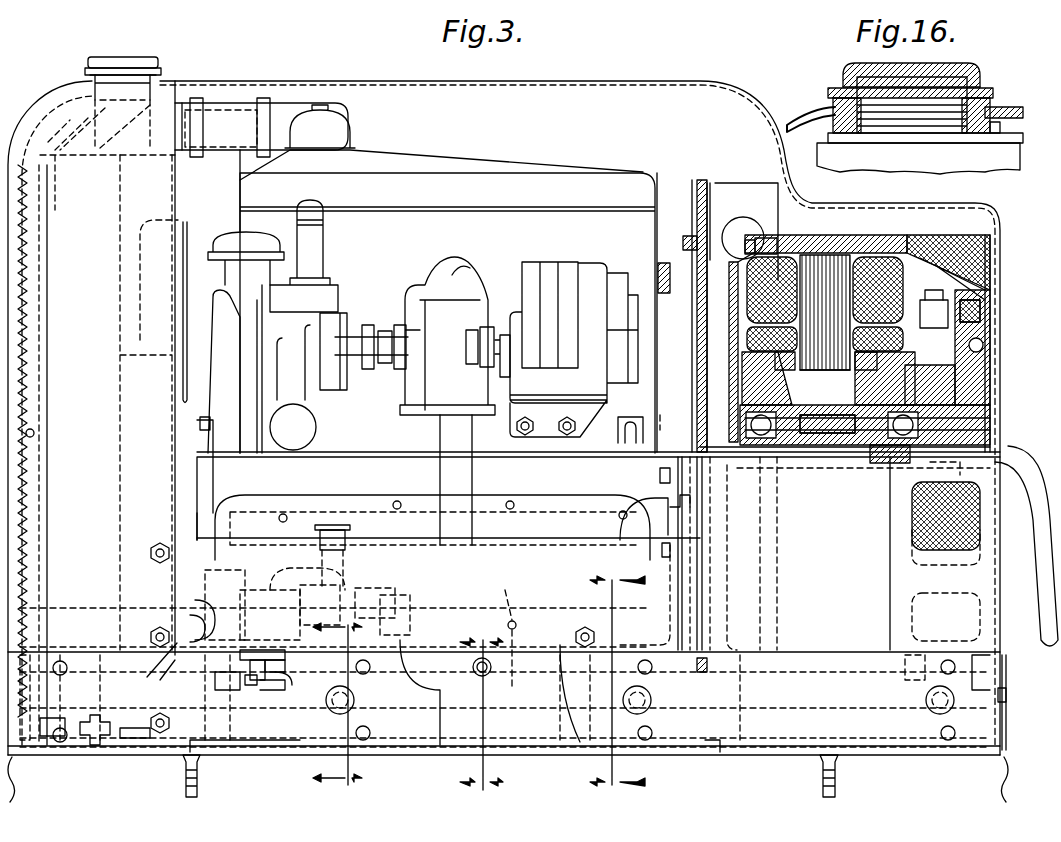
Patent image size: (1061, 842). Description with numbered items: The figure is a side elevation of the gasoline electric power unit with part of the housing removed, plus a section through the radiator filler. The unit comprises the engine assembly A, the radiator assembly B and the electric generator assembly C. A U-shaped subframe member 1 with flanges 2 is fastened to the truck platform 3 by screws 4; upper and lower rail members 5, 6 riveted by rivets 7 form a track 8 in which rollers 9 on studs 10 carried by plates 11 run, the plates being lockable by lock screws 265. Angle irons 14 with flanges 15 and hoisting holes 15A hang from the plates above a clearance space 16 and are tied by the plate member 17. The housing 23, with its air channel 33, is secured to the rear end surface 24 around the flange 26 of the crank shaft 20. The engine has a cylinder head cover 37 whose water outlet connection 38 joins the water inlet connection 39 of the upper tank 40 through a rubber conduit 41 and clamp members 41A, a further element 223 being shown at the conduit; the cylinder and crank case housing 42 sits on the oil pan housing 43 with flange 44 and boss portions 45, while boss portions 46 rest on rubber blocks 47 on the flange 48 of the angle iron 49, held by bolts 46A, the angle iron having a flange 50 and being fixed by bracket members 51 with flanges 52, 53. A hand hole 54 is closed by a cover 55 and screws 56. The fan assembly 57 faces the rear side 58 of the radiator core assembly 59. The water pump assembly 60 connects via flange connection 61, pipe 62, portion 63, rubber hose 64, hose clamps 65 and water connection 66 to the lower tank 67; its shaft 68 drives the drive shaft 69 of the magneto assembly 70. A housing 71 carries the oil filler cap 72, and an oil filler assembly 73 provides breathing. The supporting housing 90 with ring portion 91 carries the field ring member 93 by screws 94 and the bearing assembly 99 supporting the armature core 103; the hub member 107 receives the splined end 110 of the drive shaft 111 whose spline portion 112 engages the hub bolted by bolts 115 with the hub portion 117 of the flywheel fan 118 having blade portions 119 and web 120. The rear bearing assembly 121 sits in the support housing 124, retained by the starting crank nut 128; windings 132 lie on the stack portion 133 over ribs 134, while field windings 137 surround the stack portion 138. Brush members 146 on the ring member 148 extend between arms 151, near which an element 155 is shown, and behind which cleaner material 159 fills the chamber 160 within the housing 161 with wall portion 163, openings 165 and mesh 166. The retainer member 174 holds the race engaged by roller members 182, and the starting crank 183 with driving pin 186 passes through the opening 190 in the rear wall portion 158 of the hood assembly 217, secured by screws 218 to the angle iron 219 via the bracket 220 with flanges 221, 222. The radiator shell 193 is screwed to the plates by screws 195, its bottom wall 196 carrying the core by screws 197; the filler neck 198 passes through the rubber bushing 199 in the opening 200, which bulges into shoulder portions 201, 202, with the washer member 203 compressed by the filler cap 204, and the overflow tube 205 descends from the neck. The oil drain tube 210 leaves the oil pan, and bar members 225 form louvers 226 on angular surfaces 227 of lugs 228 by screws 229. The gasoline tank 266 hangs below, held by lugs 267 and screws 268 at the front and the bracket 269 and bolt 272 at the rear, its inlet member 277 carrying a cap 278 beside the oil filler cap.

In FIG. 3, the subframe member 1 is at (878, 755).
In FIG. 3, the flanges 2 is at (838, 652).
In FIG. 3, the platform or supporting portion 3 is at (1033, 760).
In FIG. 3, the screws 4 is at (198, 785).
In FIG. 3, the upper rail members 5 is at (78, 678).
In FIG. 3, the lower rail members 6 is at (108, 686).
In FIG. 3, the rivets 7 is at (60, 660).
In FIG. 3, the track or channel 8 is at (337, 709).
In FIG. 3, the rollers or wheels 9 is at (935, 742).
In FIG. 3, the studs 10 is at (354, 696).
In FIG. 3, the plates 11 is at (617, 683).
In FIG. 3, the angle irons 14 is at (700, 182).
In FIG. 3, the flanges 15 is at (738, 184).
In FIG. 3, the holes 15A is at (744, 215).
In FIG. 3, the clearance space 16 is at (712, 752).
In FIG. 3, the plate member 17 is at (690, 182).
In FIG. 3, the crank shaft 20 is at (700, 440).
In FIG. 3, the housing 23 is at (693, 237).
In FIG. 3, the rear end surface 24 is at (697, 366).
In FIG. 3, the flange 26 is at (675, 503).
In FIG. 3, the groove or channel 33 is at (660, 265).
In FIG. 3, the cylinder head cover 37 is at (545, 168).
In FIG. 3, the water outlet connection 38 is at (352, 112).
In FIG. 3, the water inlet connection 39 is at (222, 110).
In FIG. 3, the upper tank 40 is at (90, 152).
In FIG. 3, the rubber conduit 41 is at (213, 152).
In FIG. 3, the clamp members 41A is at (198, 98).
In FIG. 3, the cylinder and crank case housing 42 is at (240, 215).
In FIG. 3, the oil pan housing 43 is at (208, 520).
In FIG. 3, the flange 44 is at (670, 540).
In FIG. 3, the boss portions 45 is at (658, 478).
In FIG. 3, the boss portions 46 is at (257, 650).
In FIG. 3, the bolts 46A is at (270, 656).
In FIG. 3, the rubber blocks 47 is at (281, 674).
In FIG. 3, the flange 48 is at (272, 692).
In FIG. 3, the angle iron 49 is at (205, 645).
In FIG. 3, the vertically extending flange 50 is at (228, 696).
In FIG. 3, the angle or bracket members 51 is at (288, 590).
In FIG. 3, the vertically extending flange 52 is at (228, 570).
In FIG. 3, the horizontal extending flange 53 is at (190, 627).
In FIG. 3, the hand hole or opening 54 is at (365, 497).
In FIG. 3, the plate or cover 55 is at (395, 502).
In FIG. 3, the screws 56 is at (283, 514).
In FIG. 3, the fan assembly 57 is at (183, 280).
In FIG. 3, the rear side 58 is at (120, 322).
In FIG. 3, the radiator core assembly 59 is at (32, 435).
In FIG. 16, the radiator core assembly 59 is at (832, 160).
In FIG. 3, the water pump assembly 60 is at (420, 300).
In FIG. 3, the flange connection 61 is at (482, 265).
In FIG. 3, the water pipe or housing 62 is at (440, 440).
In FIG. 3, the forwardly extending portion 63 is at (420, 595).
In FIG. 3, the rubber hose 64 is at (350, 595).
In FIG. 3, the hose clamp 65 is at (232, 592).
In FIG. 3, the water connection 66 is at (195, 606).
In FIG. 3, the lower water tank portion 67 is at (150, 740).
In FIG. 3, the water pump shaft 68 is at (368, 330).
In FIG. 3, the drive shaft 69 is at (484, 340).
In FIG. 3, the magneto assembly 70 is at (550, 258).
In FIG. 3, the housing 71 is at (217, 358).
In FIG. 3, the oil filler cap 72 is at (250, 238).
In FIG. 3, the oil filler assembly 73 is at (324, 232).
In FIG. 3, the supporting housing 90 is at (730, 290).
In FIG. 3, the ring portion 91 is at (758, 248).
In FIG. 3, the ring member 93 is at (855, 235).
In FIG. 3, the screws 94 is at (745, 246).
In FIG. 3, the bearing assembly 99 is at (760, 414).
In FIG. 3, the armature core 103 is at (830, 415).
In FIG. 3, the hub member 107 is at (862, 395).
In FIG. 3, the splined end 110 is at (860, 462).
In FIG. 3, the drive shaft 111 is at (803, 464).
In FIG. 3, the spline portion 112 is at (735, 465).
In FIG. 3, the bolts 115 is at (696, 410).
In FIG. 3, the hub portion 117 is at (833, 540).
In FIG. 3, the flywheel fan 118 is at (697, 339).
In FIG. 3, the blade portions 119 is at (707, 195).
In FIG. 3, the web or flange 120 is at (697, 322).
In FIG. 3, the bearing assembly 121 is at (896, 418).
In FIG. 3, the support housing 124 is at (990, 367).
In FIG. 3, the starting crank nut 128 is at (920, 470).
In FIG. 3, the windings 132 is at (776, 352).
In FIG. 3, the stack portion 133 is at (826, 370).
In FIG. 3, the ribs 134 is at (800, 392).
In FIG. 3, the electrical windings 137 is at (765, 262).
In FIG. 3, the stack portion 138 is at (822, 257).
In FIG. 3, the brush members 146 is at (940, 305).
In FIG. 3, the ring member 148 is at (990, 310).
In FIG. 3, the ribs or arms 151 is at (990, 298).
In FIG. 3, the fastener 155 is at (985, 345).
In FIG. 3, the rear wall portion 158 is at (1001, 250).
In FIG. 3, the air strainer or cleaner material 159 is at (1000, 232).
In FIG. 3, the chamber 160 is at (930, 236).
In FIG. 3, the housing 161 is at (965, 238).
In FIG. 3, the wall portion 163 is at (990, 388).
In FIG. 3, the openings 165 is at (945, 595).
In FIG. 3, the mesh structure 166 is at (910, 518).
In FIG. 3, the retainer member 174 is at (990, 417).
In FIG. 3, the roller members 182 is at (990, 435).
In FIG. 3, the starting crank 183 is at (1038, 625).
In FIG. 3, the driving pin 186 is at (960, 470).
In FIG. 3, the opening 190 is at (1002, 445).
In FIG. 3, the radiator shell 193 is at (10, 158).
In FIG. 16, the radiator shell 193 is at (1012, 103).
In FIG. 3, the screws 195 is at (172, 554).
In FIG. 3, the bottom wall 196 is at (58, 748).
In FIG. 3, the screws 197 is at (110, 746).
In FIG. 3, the filler neck 198 is at (152, 92).
In FIG. 16, the filler neck 198 is at (995, 127).
In FIG. 3, the resilient or rubber bushing 199 is at (135, 103).
In FIG. 16, the resilient or rubber bushing 199 is at (870, 144).
In FIG. 3, the opening 200 is at (90, 80).
In FIG. 16, the opening 200 is at (835, 108).
In FIG. 3, the shoulder portion 201 is at (160, 118).
In FIG. 16, the shoulder portion 201 is at (830, 128).
In FIG. 3, the shoulder portion 202 is at (88, 72).
In FIG. 16, the shoulder portion 202 is at (830, 94).
In FIG. 3, the washer member 203 is at (86, 65).
In FIG. 16, the washer member 203 is at (838, 90).
In FIG. 3, the filler cap 204 is at (150, 60).
In FIG. 16, the filler cap 204 is at (845, 70).
In FIG. 3, the overflow tube 205 is at (62, 172).
In FIG. 3, the oil drain tube 210 is at (440, 742).
In FIG. 3, the hood assembly 217 is at (662, 82).
In FIG. 3, the screws 218 is at (1006, 693).
In FIG. 3, the angle iron 219 is at (982, 756).
In FIG. 3, the bracket 220 is at (985, 662).
In FIG. 3, the flange 221 is at (935, 647).
In FIG. 3, the flange 222 is at (1006, 712).
In FIG. 3, the pipe end 223 is at (197, 98).
In FIG. 3, the plates or bar members 225 is at (30, 272).
In FIG. 3, the louvers or openings 226 is at (30, 360).
In FIG. 3, the angular surfaces 227 is at (30, 395).
In FIG. 3, the lugs 228 is at (30, 222).
In FIG. 3, the screws 229 is at (30, 304).
In FIG. 3, the lock screws 265 is at (480, 673).
In FIG. 3, the gasoline tank 266 is at (290, 748).
In FIG. 3, the lugs 267 is at (258, 682).
In FIG. 3, the screws 268 is at (250, 640).
In FIG. 3, the bracket 269 is at (560, 742).
In FIG. 3, the bolt 272 is at (596, 637).
In FIG. 3, the inlet or connection member 277 is at (352, 550).
In FIG. 3, the cap or cover member 278 is at (360, 530).
In FIG. 3, the engine assembly A is at (475, 162).
In FIG. 3, the radiator assembly B is at (70, 118).
In FIG. 3, the electric generator assembly C is at (815, 234).